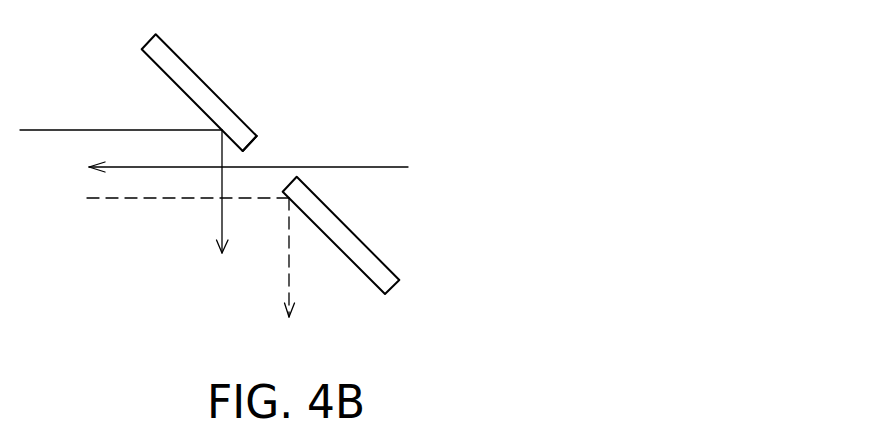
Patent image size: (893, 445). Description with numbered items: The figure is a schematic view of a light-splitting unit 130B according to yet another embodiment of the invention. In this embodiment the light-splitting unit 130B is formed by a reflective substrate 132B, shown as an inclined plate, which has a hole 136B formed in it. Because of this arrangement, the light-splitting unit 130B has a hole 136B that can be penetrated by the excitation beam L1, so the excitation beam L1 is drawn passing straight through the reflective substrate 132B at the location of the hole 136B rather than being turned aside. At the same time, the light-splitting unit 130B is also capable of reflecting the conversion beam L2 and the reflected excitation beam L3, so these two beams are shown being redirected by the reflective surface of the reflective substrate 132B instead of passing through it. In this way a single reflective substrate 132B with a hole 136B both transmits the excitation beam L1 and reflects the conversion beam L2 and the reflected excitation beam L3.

The light-splitting unit 130B is at (562, 336).
The reflective substrate 132B is at (170, 57).
The hole 136B is at (257, 140).
The excitation beam L1 is at (362, 167).
The conversion beam L2 is at (139, 199).
The reflected excitation beam L3 is at (83, 130).